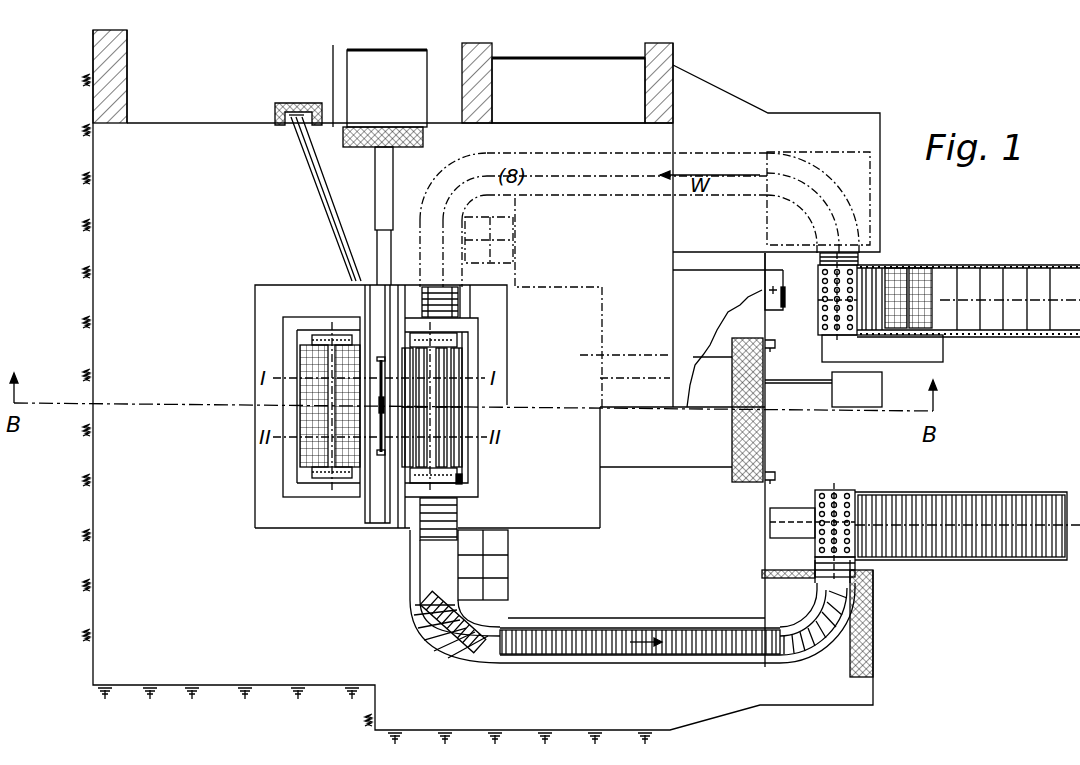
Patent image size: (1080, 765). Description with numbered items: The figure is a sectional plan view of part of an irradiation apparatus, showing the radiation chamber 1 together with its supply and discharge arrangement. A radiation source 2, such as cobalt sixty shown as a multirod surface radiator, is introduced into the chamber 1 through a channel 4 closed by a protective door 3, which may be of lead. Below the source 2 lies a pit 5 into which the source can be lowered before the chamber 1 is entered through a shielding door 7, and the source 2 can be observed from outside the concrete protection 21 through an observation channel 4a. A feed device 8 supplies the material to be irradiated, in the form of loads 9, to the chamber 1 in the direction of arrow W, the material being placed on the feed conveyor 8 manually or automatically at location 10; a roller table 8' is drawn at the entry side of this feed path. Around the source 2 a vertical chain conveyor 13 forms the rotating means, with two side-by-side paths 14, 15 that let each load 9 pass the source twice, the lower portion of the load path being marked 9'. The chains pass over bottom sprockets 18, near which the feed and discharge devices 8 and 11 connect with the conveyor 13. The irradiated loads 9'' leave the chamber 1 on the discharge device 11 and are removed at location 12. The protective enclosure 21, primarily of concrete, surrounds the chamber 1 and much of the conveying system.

The radiation chamber 1 is at (272, 509).
The radiation source 2 is at (285, 418).
The protective door 3 is at (388, 126).
The channel 4 is at (393, 191).
The observation channel 4a is at (312, 168).
The pit 5 is at (387, 468).
The shielding door 7 is at (765, 440).
The feed device 8 is at (455, 302).
The roller table 8' is at (854, 307).
The loads 9 is at (674, 316).
The container carriage lower section 9' is at (466, 437).
The irradiated loads 9'' is at (632, 596).
The location 10 is at (817, 302).
The discharge device 11 is at (458, 515).
The location 12 is at (812, 518).
The vertical chain conveyor 13 is at (478, 336).
The path 14 is at (462, 393).
The path 15 is at (466, 462).
The bottom sprocket 18 is at (462, 480).
The concrete protection 21 is at (481, 387).